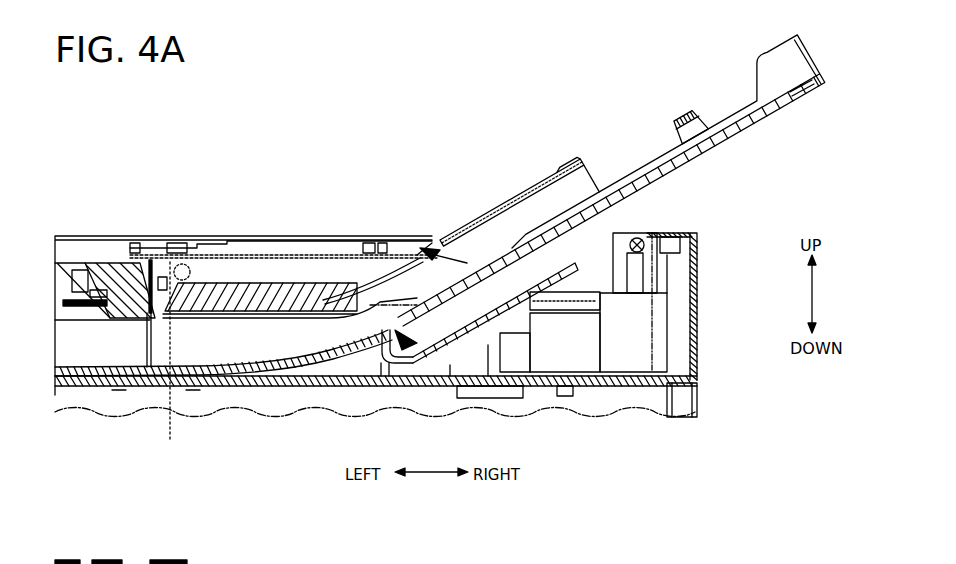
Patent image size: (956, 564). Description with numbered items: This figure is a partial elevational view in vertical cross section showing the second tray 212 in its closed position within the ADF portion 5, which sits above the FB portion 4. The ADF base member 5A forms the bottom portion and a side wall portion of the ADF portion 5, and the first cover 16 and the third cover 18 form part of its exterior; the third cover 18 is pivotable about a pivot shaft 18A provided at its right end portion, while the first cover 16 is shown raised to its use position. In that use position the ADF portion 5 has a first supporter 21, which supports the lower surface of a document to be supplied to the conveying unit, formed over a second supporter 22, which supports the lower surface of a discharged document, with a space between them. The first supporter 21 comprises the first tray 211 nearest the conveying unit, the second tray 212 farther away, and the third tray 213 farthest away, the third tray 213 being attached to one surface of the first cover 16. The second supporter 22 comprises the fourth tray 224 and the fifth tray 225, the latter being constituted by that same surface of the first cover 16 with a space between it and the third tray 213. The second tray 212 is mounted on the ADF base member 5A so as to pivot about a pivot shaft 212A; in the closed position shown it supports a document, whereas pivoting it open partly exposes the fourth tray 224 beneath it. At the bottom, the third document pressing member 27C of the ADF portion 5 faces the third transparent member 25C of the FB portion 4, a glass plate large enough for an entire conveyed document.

The FB portion 4 is at (697, 377).
The ADF portion 5 is at (693, 236).
The ADF base member 5A is at (697, 284).
The first cover 16 is at (737, 140).
The third cover 18 is at (660, 222).
The pivot shaft 18A is at (657, 250).
The first supporter 21 is at (283, 278).
The second supporter 22 is at (320, 345).
The first tray 211 is at (148, 237).
The second tray 212 is at (250, 285).
The pivot shaft 212A is at (167, 362).
The third tray 213 is at (560, 168).
The fourth tray 224 is at (213, 256).
The fifth tray 225 is at (527, 237).
The third transparent member 25C is at (193, 400).
The third document pressing member 27C is at (118, 400).